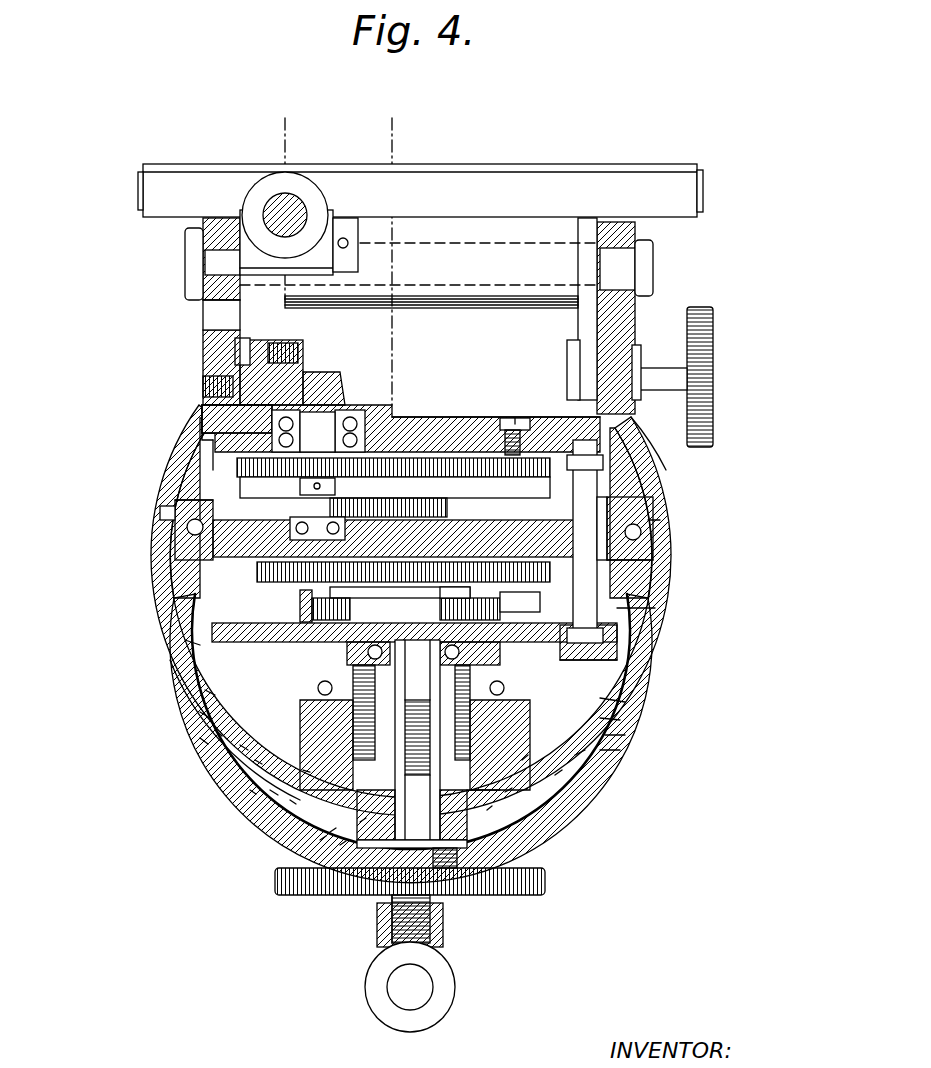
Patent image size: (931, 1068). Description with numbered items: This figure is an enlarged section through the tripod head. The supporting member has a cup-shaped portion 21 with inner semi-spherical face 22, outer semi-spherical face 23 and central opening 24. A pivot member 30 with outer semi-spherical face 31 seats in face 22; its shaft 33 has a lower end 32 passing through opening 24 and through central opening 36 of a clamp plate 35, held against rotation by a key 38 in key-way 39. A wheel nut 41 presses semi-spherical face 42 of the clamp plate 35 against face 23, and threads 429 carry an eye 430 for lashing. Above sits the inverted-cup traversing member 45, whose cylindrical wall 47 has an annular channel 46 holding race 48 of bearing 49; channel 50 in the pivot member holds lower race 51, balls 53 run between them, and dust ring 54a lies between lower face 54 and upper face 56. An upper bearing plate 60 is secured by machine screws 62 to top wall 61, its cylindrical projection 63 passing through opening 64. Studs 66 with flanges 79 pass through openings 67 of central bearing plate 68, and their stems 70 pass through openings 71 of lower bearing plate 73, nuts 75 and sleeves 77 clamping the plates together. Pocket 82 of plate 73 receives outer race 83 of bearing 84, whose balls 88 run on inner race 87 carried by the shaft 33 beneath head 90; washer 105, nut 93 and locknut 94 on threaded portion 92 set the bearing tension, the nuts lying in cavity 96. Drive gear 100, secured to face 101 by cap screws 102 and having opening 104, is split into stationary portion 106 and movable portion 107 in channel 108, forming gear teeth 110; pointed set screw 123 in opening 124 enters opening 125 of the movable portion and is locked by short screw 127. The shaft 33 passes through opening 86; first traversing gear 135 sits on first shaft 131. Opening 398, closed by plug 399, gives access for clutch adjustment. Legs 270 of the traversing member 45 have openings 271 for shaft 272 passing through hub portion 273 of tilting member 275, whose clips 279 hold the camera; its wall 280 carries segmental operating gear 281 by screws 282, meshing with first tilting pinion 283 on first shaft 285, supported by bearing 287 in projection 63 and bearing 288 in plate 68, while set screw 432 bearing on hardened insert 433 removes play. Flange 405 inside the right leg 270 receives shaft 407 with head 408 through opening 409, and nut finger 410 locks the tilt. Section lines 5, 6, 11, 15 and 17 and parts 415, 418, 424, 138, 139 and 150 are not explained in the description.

The pivot pin 415 is at (274, 207).
The pivot boss 418 is at (302, 180).
The section line 17 is at (302, 135).
The section line 5 is at (365, 135).
The tilting member 275 is at (463, 192).
The clips 279 is at (143, 176).
The clamp block 424 is at (345, 218).
The openings of the legs 271 is at (205, 246).
The shaft 272 is at (215, 258).
The hub portion 273 is at (495, 268).
The legs 270 is at (628, 318).
The wall 280 is at (205, 318).
The machine screws 282 is at (245, 333).
The segmental operating gear 281 is at (312, 350).
The first shaft 285 is at (352, 420).
The hardened insert 433 is at (212, 368).
The first tilting pinion 283 is at (332, 388).
The set screw 432 is at (220, 382).
The cylindrical projection 63 is at (347, 430).
The bearing 287 is at (212, 438).
The opening 64 is at (398, 420).
The top wall 61 is at (440, 440).
The upper bearing plate 60 is at (458, 445).
The machine screws 62 is at (520, 420).
The flange 405 is at (584, 328).
The head 408 is at (572, 360).
The opening 409 is at (612, 352).
The shaft 407 is at (690, 375).
The nut finger 410 is at (700, 382).
The annular channel 46 is at (205, 470).
The section line 11 is at (215, 462).
The traversing member 45 is at (160, 472).
The bearing plate studs 66 is at (598, 462).
The cylindrical wall 47 is at (715, 440).
The annular flanges 79 is at (642, 498).
The balls 53 is at (182, 512).
The interrupter race 48 is at (205, 505).
The upper face 56 is at (175, 514).
The annular channel 50 is at (185, 528).
The bearing 288 is at (298, 522).
The traversing member supporting bearing 49 is at (660, 510).
The dust ring 54a is at (662, 524).
The lower face 54 is at (675, 530).
The lower bearing race 51 is at (190, 548).
The section line 6 is at (210, 568).
The openings 67 is at (660, 555).
The central bearing plate 68 is at (190, 560).
The gear 150 is at (257, 578).
The pinion 138 is at (318, 602).
The bracket 139 is at (310, 608).
The first traversing gear 135 is at (440, 610).
The first shaft 131 is at (470, 604).
The stems 70 is at (585, 605).
The sleeves 77 is at (655, 608).
The pivot member 30 is at (185, 605).
The lower bearing plate 73 is at (185, 640).
The balls 88 is at (352, 652).
The outer race 83 is at (385, 660).
The inner race 87 is at (386, 652).
The ball bearing 84 is at (388, 660).
The head 90 is at (468, 618).
The cylindrical pocket 82 is at (500, 655).
The inner semi-spherical face 22 is at (648, 626).
The openings 71 is at (630, 640).
The cup-shaped portion 21 is at (160, 645).
The outer semi-spherical face 31 is at (205, 690).
The stationary portion 106 is at (375, 680).
The concentric opening 104 is at (378, 697).
The washer 105 is at (385, 715).
The section line 15 is at (310, 690).
The nuts 75 is at (617, 652).
The opening 398 is at (625, 702).
The plug 399 is at (620, 720).
The drive gear 100 is at (200, 712).
The semi-spherical face 42 is at (215, 730).
The gear teeth 110 is at (240, 745).
The traverse face 101 is at (255, 760).
The outer semi-spherical face 23 is at (200, 738).
The annular channel 108 is at (270, 790).
The shaft 33 is at (303, 770).
The cap screws 102 is at (290, 800).
The clamp member 35 is at (250, 790).
The movable portion 107 is at (620, 750).
The opening 125 is at (625, 735).
The opening 124 is at (575, 755).
The central opening 24 is at (555, 775).
The pointed set screw 123 is at (522, 760).
The concentric opening 86 is at (462, 808).
The central opening 36 is at (455, 860).
The short screw 127 is at (487, 810).
The nut 93 is at (330, 832).
The threaded portion 92 is at (360, 822).
The lower end 32 is at (378, 832).
The cavity 96 is at (320, 840).
The locknut 94 is at (340, 845).
The axial key-way 39 is at (400, 885).
The key 38 is at (400, 895).
The wheel nut 41 is at (300, 895).
The threads 429 is at (385, 925).
The eye 430 is at (380, 998).